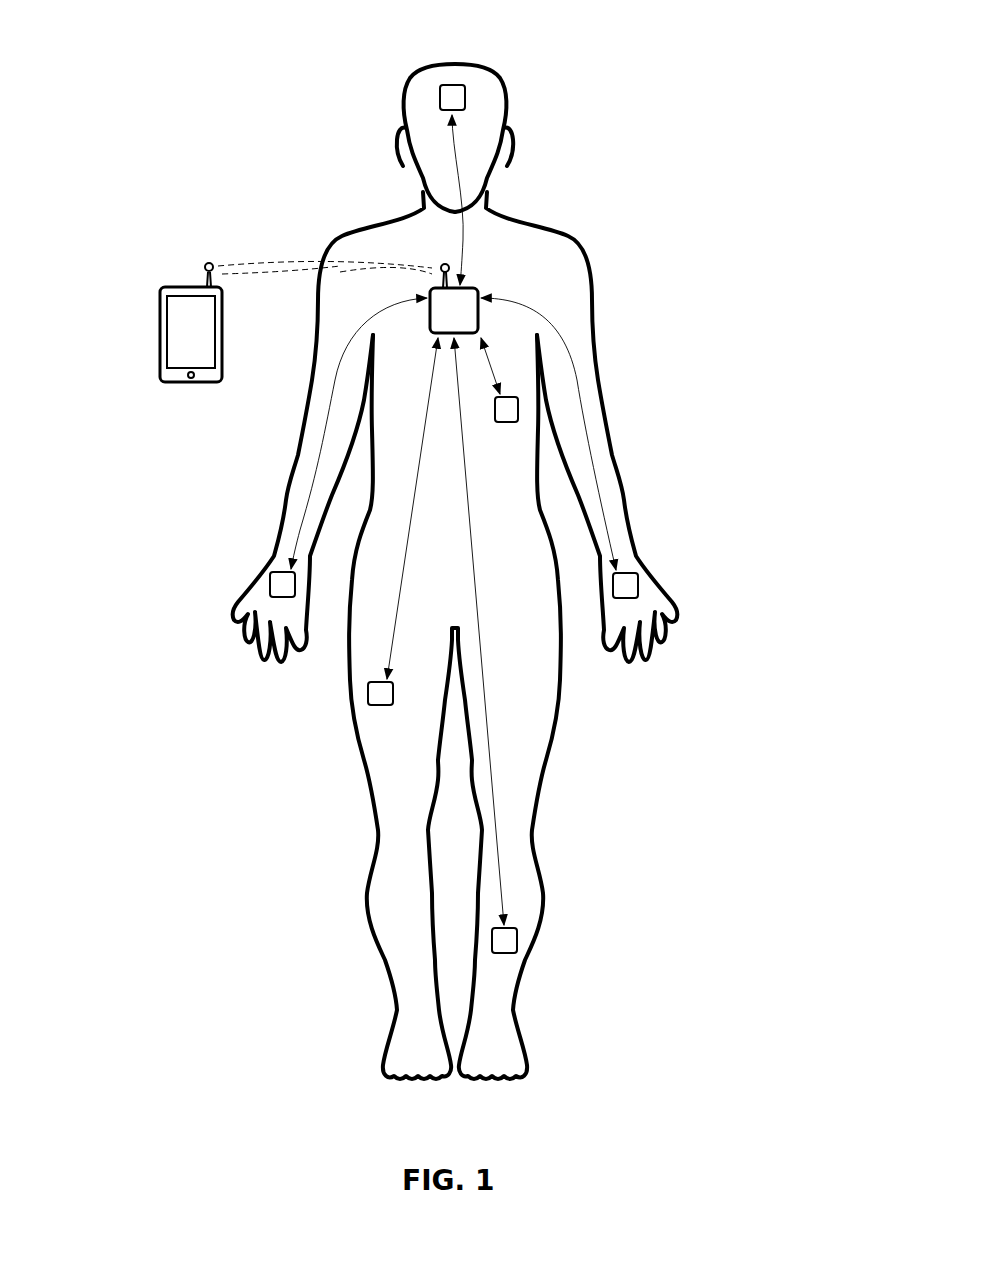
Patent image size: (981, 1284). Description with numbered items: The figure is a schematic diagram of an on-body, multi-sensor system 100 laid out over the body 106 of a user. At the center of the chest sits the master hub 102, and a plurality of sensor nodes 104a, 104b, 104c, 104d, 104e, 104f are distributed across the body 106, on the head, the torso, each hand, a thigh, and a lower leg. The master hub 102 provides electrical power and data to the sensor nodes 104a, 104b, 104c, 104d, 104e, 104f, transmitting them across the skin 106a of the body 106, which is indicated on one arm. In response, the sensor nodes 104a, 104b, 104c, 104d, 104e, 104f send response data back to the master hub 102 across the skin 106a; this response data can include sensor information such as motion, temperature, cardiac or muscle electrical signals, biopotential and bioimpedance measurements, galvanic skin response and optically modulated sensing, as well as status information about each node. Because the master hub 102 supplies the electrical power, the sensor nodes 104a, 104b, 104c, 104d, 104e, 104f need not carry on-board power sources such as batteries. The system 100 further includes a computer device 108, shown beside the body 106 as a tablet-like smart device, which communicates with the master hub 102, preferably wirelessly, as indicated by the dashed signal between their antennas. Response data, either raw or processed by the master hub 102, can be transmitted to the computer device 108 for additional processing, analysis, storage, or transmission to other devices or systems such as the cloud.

The on-body, multi-sensor system 100 is at (573, 92).
The master hub 102 is at (478, 290).
The sensor node 104a is at (450, 96).
The sensor node 104b is at (507, 407).
The sensor node 104c is at (282, 585).
The sensor node 104d is at (625, 586).
The sensor node 104e is at (380, 694).
The sensor node 104f is at (505, 941).
The body 106 is at (651, 435).
The skin 106a is at (595, 352).
The computer device 108 is at (160, 310).